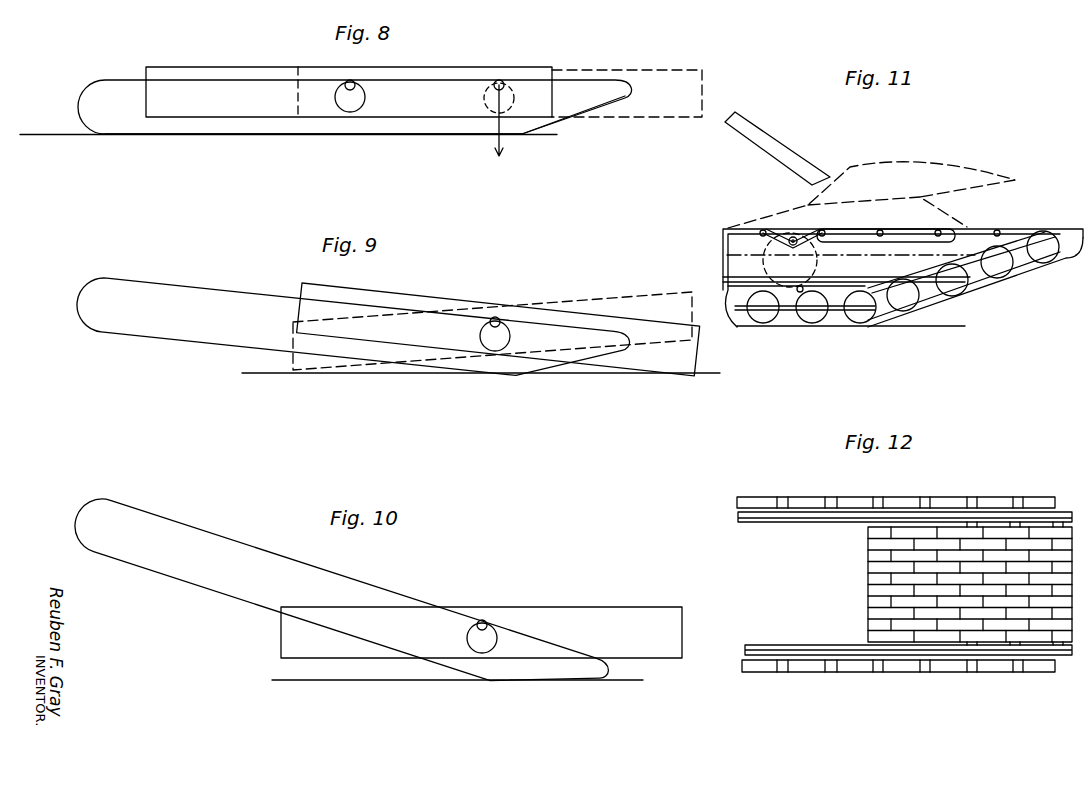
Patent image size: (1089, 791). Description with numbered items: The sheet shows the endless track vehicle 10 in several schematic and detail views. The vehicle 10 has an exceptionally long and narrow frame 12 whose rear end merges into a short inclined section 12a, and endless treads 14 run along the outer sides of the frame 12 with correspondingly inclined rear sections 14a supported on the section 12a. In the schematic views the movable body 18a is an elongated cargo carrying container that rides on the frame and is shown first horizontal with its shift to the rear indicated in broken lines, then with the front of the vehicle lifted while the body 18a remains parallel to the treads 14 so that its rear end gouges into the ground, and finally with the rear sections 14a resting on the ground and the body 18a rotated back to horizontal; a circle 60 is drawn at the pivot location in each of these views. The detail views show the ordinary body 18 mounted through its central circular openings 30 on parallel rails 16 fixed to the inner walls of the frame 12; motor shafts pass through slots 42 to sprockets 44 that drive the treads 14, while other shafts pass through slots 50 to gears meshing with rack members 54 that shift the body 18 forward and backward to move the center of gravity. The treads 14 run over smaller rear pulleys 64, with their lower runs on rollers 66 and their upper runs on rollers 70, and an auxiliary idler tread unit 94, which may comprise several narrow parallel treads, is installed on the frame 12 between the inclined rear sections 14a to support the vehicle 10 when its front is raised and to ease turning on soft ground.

In FIG. 8, the endless track vehicle 10 is at (300, 142).
In FIG. 9, the endless track vehicle 10 is at (334, 386).
In FIG. 10, the endless track vehicle 10 is at (207, 603).
In FIG. 12, the frame 12 is at (760, 515).
In FIG. 11, the short inclined rear section 12a is at (1007, 233).
In FIG. 8, the endless treads 14 is at (422, 137).
In FIG. 9, the endless treads 14 is at (435, 367).
In FIG. 10, the endless treads 14 is at (268, 610).
In FIG. 12, the endless treads 14 is at (797, 500).
In FIG. 8, the inclined tread sections 14a is at (565, 120).
In FIG. 9, the inclined tread sections 14a is at (560, 365).
In FIG. 10, the inclined tread sections 14a is at (535, 681).
In FIG. 11, the inclined tread sections 14a is at (963, 290).
In FIG. 12, the inclined tread sections 14a is at (918, 500).
In FIG. 11, the rails 16 is at (723, 250).
In FIG. 12, the rails 16 is at (830, 522).
In FIG. 11, the vehicle body 18 is at (916, 160).
In FIG. 8, the movable body 18a is at (516, 72).
In FIG. 9, the movable body 18a is at (415, 302).
In FIG. 10, the movable body 18a is at (602, 614).
In FIG. 11, the central circular openings 30 is at (737, 292).
In FIG. 11, the slots 42 is at (740, 235).
In FIG. 8, the sprockets 44 is at (355, 81).
In FIG. 9, the sprockets 44 is at (498, 318).
In FIG. 10, the sprockets 44 is at (486, 622).
In FIG. 11, the sprockets 44 is at (787, 230).
In FIG. 11, the slots 50 is at (723, 275).
In FIG. 11, the rack members 54 is at (837, 281).
In FIG. 8, the pivot circle 60 is at (366, 98).
In FIG. 9, the pivot circle 60 is at (511, 336).
In FIG. 10, the pivot circle 60 is at (467, 639).
In FIG. 11, the pivot circle 60 is at (822, 242).
In FIG. 11, the smaller pulleys 64 is at (1047, 257).
In FIG. 11, the rollers 66 is at (810, 317).
In FIG. 11, the rollers 70 is at (940, 232).
In FIG. 11, the idler tread unit 94 is at (1017, 230).
In FIG. 12, the idler tread unit 94 is at (943, 537).